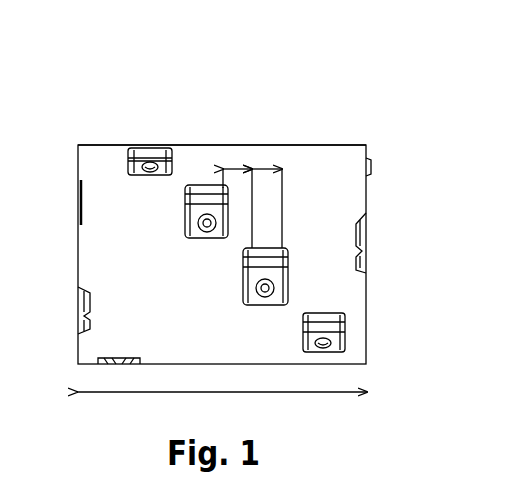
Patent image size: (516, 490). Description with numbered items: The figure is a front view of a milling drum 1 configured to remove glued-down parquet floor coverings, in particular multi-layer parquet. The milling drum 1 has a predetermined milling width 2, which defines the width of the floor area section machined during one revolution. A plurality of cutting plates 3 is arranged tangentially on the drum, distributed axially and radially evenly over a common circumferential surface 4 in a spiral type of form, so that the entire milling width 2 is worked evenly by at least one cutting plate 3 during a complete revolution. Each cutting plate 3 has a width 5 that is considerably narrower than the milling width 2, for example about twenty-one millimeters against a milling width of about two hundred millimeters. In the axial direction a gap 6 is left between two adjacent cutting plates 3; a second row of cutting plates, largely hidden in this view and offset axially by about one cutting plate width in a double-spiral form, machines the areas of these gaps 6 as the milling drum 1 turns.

The milling drum 1 is at (412, 78).
The milling width 2 is at (353, 392).
The cutting plate 3 is at (143, 148).
The circumferential surface 4 is at (210, 146).
The width of a cutting plate 5 is at (268, 168).
The gap 6 is at (232, 168).